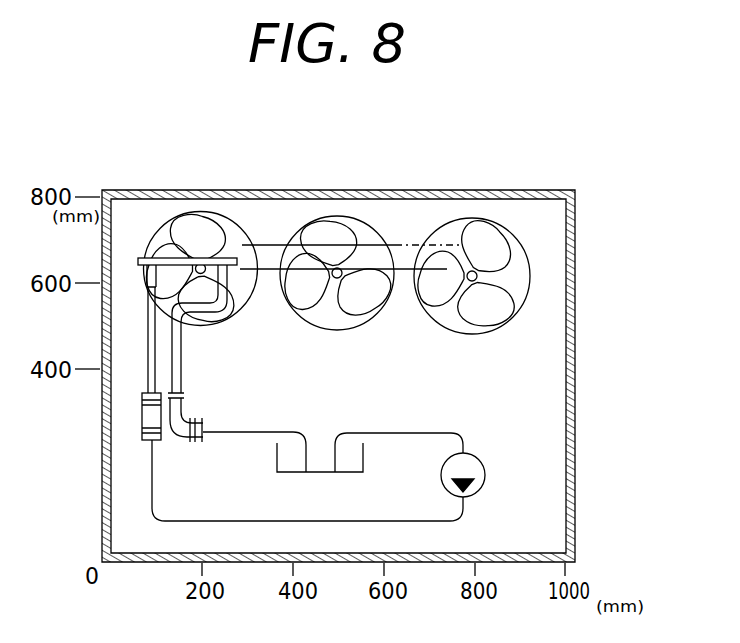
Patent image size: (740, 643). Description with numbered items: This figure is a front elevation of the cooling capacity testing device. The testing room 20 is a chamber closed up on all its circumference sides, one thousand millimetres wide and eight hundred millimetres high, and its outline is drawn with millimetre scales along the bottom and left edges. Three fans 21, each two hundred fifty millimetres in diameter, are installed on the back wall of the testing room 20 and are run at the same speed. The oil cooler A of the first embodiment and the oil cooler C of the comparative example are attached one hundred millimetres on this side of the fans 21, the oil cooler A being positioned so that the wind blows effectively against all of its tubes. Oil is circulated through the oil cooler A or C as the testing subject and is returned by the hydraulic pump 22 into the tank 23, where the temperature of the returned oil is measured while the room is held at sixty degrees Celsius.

The testing room 20 is at (575, 448).
The fan 21 is at (192, 230).
The hydraulic pump 22 is at (478, 460).
The tank 23 is at (277, 452).
The oil cooler of the first embodiment A is at (206, 246).
The oil cooler of the comparative example C is at (395, 245).